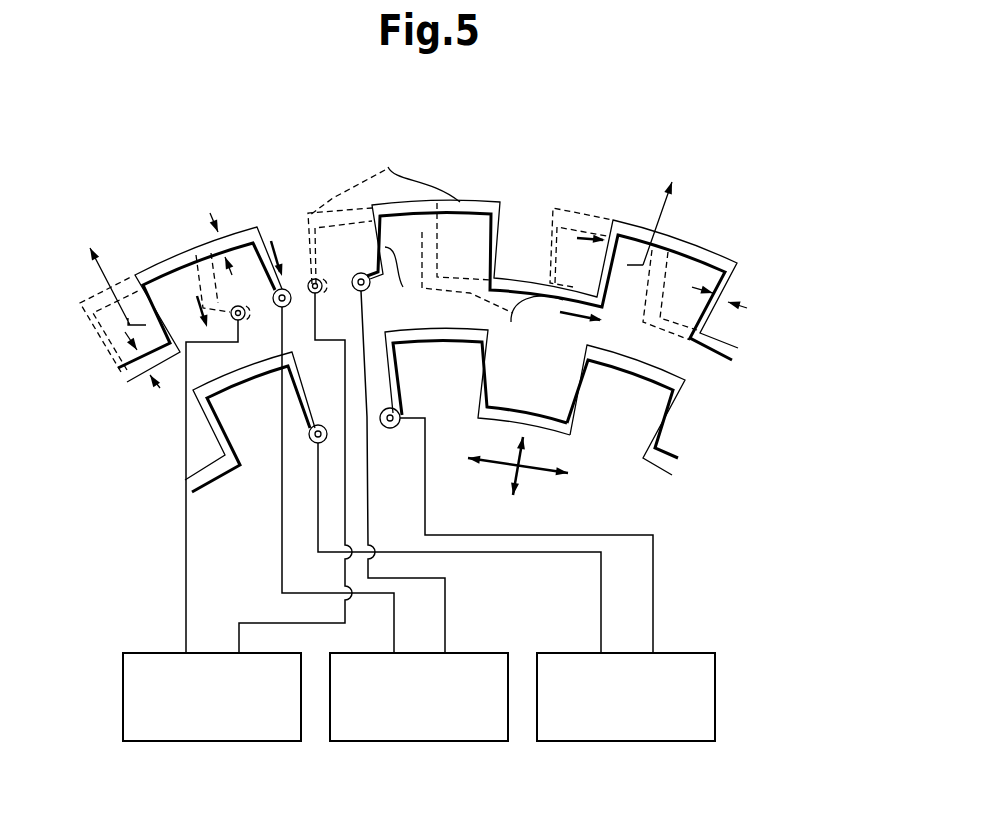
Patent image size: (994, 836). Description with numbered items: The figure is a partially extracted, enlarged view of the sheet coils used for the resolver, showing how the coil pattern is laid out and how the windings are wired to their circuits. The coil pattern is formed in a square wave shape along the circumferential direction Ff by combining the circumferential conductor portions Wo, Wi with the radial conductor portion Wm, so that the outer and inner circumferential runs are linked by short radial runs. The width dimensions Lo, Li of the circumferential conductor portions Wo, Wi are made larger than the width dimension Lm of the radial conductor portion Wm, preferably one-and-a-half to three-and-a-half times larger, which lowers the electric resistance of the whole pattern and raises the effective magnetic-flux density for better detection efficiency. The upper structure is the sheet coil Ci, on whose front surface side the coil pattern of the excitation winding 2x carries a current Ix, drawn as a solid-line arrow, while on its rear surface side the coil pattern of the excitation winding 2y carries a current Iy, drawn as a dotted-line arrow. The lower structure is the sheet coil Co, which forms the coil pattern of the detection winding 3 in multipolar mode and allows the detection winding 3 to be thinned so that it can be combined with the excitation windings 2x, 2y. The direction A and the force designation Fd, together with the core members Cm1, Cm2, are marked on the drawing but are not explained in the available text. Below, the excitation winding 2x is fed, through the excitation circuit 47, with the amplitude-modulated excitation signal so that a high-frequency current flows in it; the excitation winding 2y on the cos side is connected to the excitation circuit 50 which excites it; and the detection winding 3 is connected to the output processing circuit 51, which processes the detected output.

The excitation winding 2x is at (482, 197).
The excitation winding 2y is at (580, 205).
The detection winding 3 is at (692, 437).
The excitation circuit 47 is at (417, 742).
The excitation circuit 50 is at (210, 742).
The output processing circuit 51 is at (625, 742).
The sheet coil Ci is at (247, 193).
The first core member Cm1 is at (193, 268).
The sheet coil Co is at (703, 402).
The second core member Cm2 is at (687, 455).
The width dimension Lo is at (212, 233).
The width dimension Li is at (150, 374).
The width dimension Lm is at (739, 304).
The current Ix is at (273, 237).
The current Iy is at (197, 296).
The circumferential conductor portion Wo is at (385, 178).
The radial conductor portion Wm is at (405, 279).
The circumferential conductor portion Wi is at (530, 323).
The detent force Fd is at (513, 472).
The circumferential direction Ff is at (527, 470).
The direction A is at (384, 243).